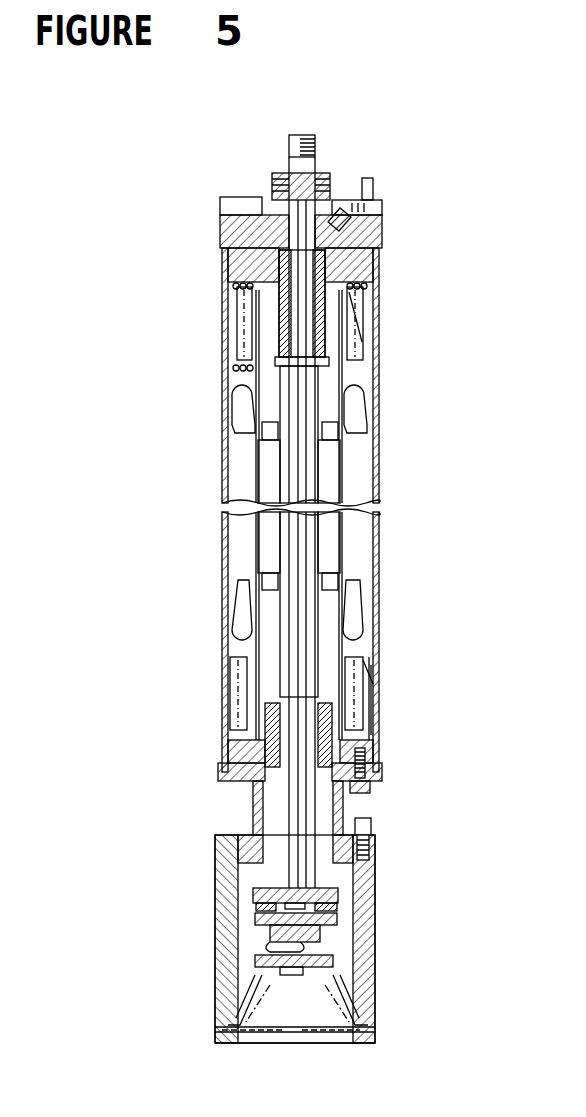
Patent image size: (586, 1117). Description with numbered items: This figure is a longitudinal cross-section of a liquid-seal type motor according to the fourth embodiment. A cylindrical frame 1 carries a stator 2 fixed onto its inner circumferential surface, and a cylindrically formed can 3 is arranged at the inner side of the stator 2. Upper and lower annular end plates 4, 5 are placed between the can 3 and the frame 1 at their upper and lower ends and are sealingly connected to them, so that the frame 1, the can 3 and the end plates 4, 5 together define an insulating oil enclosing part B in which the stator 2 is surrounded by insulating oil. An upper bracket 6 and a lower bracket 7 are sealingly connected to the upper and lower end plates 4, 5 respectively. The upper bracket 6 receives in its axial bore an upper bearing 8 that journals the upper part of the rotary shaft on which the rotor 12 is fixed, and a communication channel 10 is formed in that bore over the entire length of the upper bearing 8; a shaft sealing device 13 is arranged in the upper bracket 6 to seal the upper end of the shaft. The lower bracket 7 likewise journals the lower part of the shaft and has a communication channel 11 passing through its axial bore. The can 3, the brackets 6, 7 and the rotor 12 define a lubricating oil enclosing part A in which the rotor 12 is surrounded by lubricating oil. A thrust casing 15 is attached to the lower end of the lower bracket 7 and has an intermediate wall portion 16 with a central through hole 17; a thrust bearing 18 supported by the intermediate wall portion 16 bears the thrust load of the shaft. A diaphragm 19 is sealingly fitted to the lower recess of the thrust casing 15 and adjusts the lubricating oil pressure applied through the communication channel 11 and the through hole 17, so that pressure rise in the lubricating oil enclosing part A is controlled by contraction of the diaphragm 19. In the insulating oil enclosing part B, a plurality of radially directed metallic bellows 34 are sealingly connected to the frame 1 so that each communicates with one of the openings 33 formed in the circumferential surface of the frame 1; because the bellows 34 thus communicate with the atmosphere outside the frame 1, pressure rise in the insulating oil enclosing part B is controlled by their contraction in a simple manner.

The cylindrical frame 1 is at (228, 533).
The stator 2 is at (232, 488).
The can 3 is at (240, 640).
The upper annular end plate 4 is at (222, 262).
The lower annular end plate 5 is at (228, 752).
The upper bracket 6 is at (222, 231).
The lower bracket 7 is at (226, 770).
The upper bearing 8 is at (350, 318).
The communication channel 10 is at (288, 318).
The communication channel 11 is at (334, 738).
The rotor 12 is at (272, 462).
The shaft sealing device 13 is at (333, 212).
The thrust casing 15 is at (228, 885).
The intermediate wall portion 16 is at (272, 945).
The through hole 17 is at (340, 955).
The thrust bearing 18 is at (342, 912).
The diaphragm 19 is at (240, 1005).
The openings 33 is at (376, 694).
The metallic bellows 34 is at (365, 672).
The lubricating oil enclosing part A is at (330, 378).
The insulating oil enclosing part B is at (233, 415).